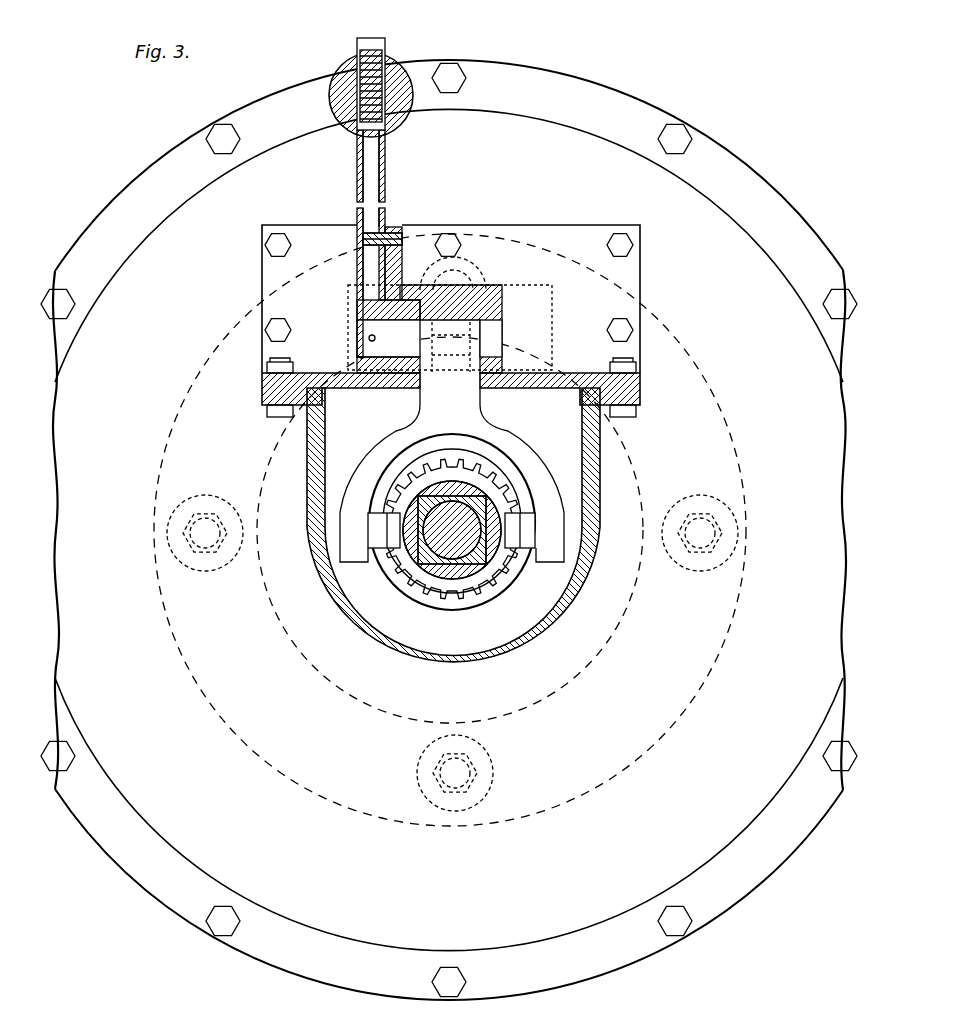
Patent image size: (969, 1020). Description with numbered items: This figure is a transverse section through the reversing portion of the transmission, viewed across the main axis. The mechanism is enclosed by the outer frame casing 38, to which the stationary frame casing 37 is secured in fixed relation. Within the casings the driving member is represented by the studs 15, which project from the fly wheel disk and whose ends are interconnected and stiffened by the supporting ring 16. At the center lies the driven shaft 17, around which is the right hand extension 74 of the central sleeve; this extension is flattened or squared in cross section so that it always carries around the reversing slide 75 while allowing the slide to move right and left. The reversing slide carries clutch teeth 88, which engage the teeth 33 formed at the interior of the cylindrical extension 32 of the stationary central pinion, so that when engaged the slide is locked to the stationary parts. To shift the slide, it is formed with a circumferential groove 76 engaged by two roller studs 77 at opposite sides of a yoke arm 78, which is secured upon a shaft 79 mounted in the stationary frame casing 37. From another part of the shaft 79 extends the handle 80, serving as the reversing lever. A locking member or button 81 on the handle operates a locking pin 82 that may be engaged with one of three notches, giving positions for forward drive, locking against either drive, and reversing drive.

The studs 15 is at (452, 780).
The supporting ring 16 is at (347, 747).
The driven shaft 17 is at (437, 565).
The cylindrical extension 32 is at (483, 600).
The teeth 33 is at (475, 593).
The stationary frame casing 37 is at (585, 232).
The outer frame casing 38 is at (747, 172).
The right hand extension 74 is at (420, 553).
The reversing slide 75 is at (460, 570).
The circumferential groove 76 is at (500, 560).
The roller studs 77 is at (390, 528).
The yoke arm 78 is at (372, 455).
The shaft 79 is at (488, 338).
The handle 80 is at (357, 178).
The locking member or button 81 is at (373, 47).
The locking pin 82 is at (392, 228).
The clutch teeth 88 is at (487, 473).